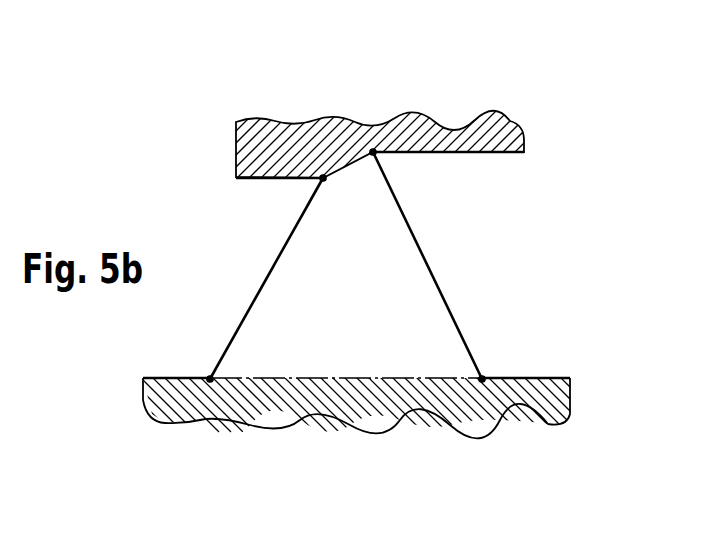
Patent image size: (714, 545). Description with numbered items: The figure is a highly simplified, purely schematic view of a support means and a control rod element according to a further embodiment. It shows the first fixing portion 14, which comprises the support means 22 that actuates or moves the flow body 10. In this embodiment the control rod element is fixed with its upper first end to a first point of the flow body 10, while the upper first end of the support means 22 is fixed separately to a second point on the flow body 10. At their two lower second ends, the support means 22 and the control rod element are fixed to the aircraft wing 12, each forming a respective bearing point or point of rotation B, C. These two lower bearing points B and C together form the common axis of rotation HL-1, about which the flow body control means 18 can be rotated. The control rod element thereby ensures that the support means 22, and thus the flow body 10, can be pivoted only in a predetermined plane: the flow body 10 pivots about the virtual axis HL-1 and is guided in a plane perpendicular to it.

The flow body 10 is at (468, 137).
The aircraft wing 12 is at (323, 400).
The first fixing portion 14 is at (331, 75).
The flow body control means 18 is at (430, 260).
The support means 22 is at (273, 265).
The bearing point B is at (209, 377).
The bearing point C is at (483, 377).
The common axis of rotation HL-1 is at (308, 376).